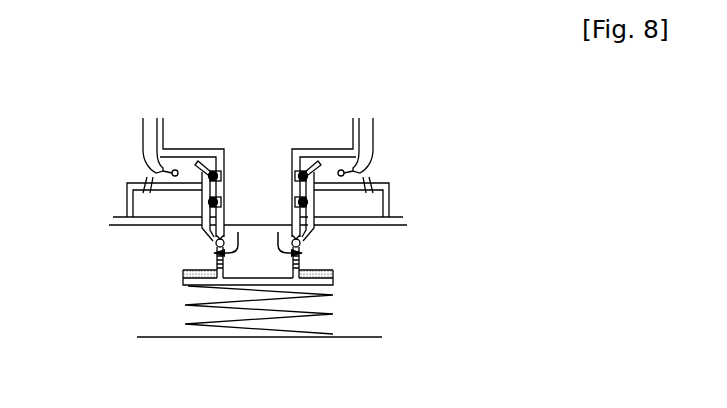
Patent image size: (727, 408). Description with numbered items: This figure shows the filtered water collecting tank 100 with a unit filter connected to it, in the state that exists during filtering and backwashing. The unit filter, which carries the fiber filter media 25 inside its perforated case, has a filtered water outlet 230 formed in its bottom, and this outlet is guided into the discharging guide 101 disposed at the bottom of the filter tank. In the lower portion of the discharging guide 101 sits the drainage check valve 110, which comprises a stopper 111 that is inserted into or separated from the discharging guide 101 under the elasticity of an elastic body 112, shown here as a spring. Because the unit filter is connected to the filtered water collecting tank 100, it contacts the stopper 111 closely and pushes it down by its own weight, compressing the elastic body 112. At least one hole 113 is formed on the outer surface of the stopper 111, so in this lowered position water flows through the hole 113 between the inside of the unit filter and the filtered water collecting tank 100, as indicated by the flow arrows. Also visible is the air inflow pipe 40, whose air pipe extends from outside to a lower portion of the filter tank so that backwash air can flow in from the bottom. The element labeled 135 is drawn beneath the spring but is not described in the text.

The filtered water outlet 230 is at (290, 158).
The fiber filter media 25 is at (372, 150).
The air inflow pipe 40 is at (148, 205).
The discharging guide 101 is at (318, 233).
The hole 113 is at (340, 268).
The stopper 111 is at (336, 284).
The drainage check valve 110 is at (160, 275).
The elastic body 112 is at (258, 310).
The base surface 135 is at (353, 330).
The filtered water collecting tank 100 is at (211, 356).